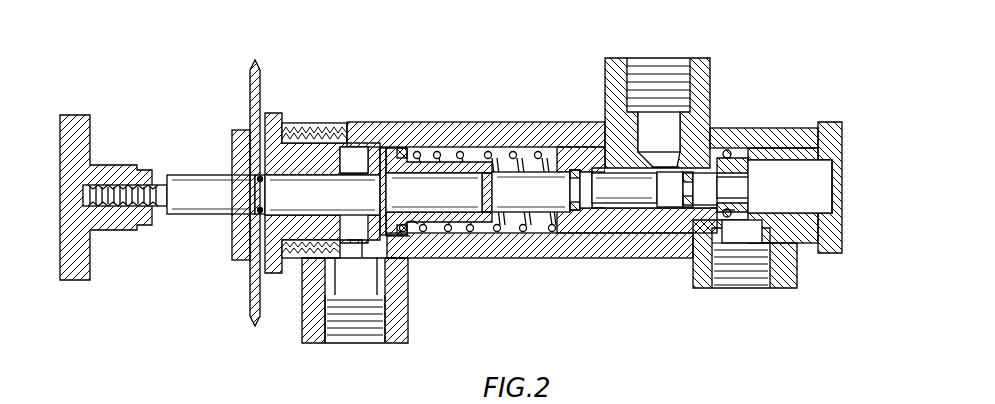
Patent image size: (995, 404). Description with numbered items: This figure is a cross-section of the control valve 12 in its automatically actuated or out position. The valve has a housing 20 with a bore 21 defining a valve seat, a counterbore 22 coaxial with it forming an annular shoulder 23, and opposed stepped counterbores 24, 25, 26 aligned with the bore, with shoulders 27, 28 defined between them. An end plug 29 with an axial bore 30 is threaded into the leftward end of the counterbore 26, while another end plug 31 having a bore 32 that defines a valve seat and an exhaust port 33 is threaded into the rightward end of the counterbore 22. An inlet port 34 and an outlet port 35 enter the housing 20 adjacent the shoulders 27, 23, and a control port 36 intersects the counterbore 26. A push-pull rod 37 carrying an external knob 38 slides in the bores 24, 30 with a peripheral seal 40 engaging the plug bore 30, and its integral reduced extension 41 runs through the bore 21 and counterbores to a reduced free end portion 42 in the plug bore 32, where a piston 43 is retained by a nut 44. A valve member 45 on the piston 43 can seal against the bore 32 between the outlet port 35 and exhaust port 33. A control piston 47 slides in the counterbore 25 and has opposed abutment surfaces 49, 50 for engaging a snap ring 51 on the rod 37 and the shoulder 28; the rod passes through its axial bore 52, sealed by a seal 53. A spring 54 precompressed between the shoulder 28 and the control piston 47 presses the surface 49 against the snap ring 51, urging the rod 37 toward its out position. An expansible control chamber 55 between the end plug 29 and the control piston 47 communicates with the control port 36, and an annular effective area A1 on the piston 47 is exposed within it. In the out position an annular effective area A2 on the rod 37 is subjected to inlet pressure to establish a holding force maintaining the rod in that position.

The control valve 12 is at (438, 100).
The housing 20 is at (548, 118).
The bore 21 is at (697, 213).
The counterbore 22 is at (740, 152).
The annular shoulder 23 is at (727, 149).
The stepped counterbore 24 is at (630, 206).
The stepped counterbore 25 is at (428, 233).
The stepped counterbore 26 is at (312, 245).
The shoulder 27 is at (686, 212).
The shoulder 28 is at (567, 231).
The end plug 29 is at (274, 112).
The axial bore 30 is at (299, 176).
The end plug 31 is at (825, 122).
The bore 32 is at (792, 160).
The exhaust port 33 is at (855, 169).
The inlet port 34 is at (662, 62).
The outlet port 35 is at (760, 282).
The control port 36 is at (378, 335).
The push-pull rod 37 is at (183, 166).
The knob 38 is at (95, 257).
The peripheral seal 40 is at (262, 210).
The reduced extension 41 is at (659, 132).
The reduced free end portion 42 is at (775, 190).
The piston 43 is at (741, 252).
The nut 44 is at (760, 200).
The valve member 45 is at (735, 212).
The control piston 47 is at (416, 164).
The abutment surface 49 is at (383, 150).
The abutment surface 50 is at (505, 148).
The snap ring 51 is at (383, 205).
The axial bore 52 is at (468, 207).
The seal 53 is at (503, 182).
The spring 54 is at (525, 238).
The expansible control chamber 55 is at (352, 150).
The annular effective area A1 is at (402, 238).
The annular effective area A2 is at (602, 242).